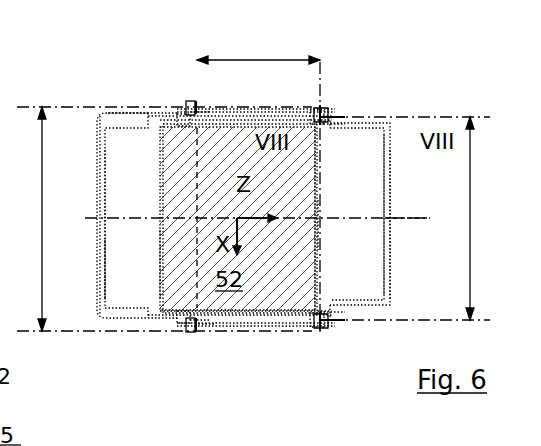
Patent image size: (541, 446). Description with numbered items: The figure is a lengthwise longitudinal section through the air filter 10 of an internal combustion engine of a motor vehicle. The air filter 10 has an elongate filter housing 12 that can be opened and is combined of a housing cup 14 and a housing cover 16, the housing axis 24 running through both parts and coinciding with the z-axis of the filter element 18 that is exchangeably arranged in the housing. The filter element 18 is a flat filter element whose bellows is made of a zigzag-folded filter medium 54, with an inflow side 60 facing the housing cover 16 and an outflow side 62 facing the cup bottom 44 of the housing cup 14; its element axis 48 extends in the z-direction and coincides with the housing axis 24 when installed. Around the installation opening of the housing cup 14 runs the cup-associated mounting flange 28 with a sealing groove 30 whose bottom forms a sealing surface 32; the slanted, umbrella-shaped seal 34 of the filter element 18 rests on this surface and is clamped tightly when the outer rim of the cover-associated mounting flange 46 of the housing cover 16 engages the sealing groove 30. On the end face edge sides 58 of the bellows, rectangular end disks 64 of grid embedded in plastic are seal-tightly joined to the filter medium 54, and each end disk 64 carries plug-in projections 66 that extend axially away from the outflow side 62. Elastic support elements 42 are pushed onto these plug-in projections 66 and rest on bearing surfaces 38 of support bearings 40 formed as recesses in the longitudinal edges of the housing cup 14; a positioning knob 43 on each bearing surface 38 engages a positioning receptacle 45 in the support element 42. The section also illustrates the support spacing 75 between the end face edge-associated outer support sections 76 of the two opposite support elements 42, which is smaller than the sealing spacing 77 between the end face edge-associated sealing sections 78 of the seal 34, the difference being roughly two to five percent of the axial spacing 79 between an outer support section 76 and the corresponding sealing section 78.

The air filter 10 is at (482, 78).
The filter housing 12 is at (112, 104).
The housing cup 14 is at (395, 128).
The housing cover 16 is at (134, 116).
The filter element 18 is at (172, 190).
The housing axis 24 is at (406, 216).
The cup-associated mounting flange 28 is at (199, 112).
The sealing groove 30 is at (199, 331).
The sealing surface 32 is at (210, 324).
The seal 34 is at (182, 104).
The bearing surface 38 is at (326, 116).
The support bearing 40 is at (380, 130).
The support element 42 is at (313, 116).
The positioning knob 43 is at (330, 124).
The cup bottom 44 is at (390, 258).
The positioning receptacle 45 is at (332, 118).
The cover-associated mounting flange 46 is at (186, 328).
The element axis 48 is at (108, 216).
The filter medium 54 is at (182, 263).
The end face edge side 58 is at (255, 114).
The inflow side 60 is at (152, 270).
The outflow side 62 is at (326, 240).
The end disk 64 is at (180, 117).
The plug-in projection 66 is at (316, 128).
The support spacing 75 is at (470, 282).
The end face edge-associated outer support section 76 is at (322, 117).
The sealing spacing 77 is at (42, 186).
The end face edge-associated sealing section 78 is at (196, 102).
The axial spacing 79 is at (284, 58).